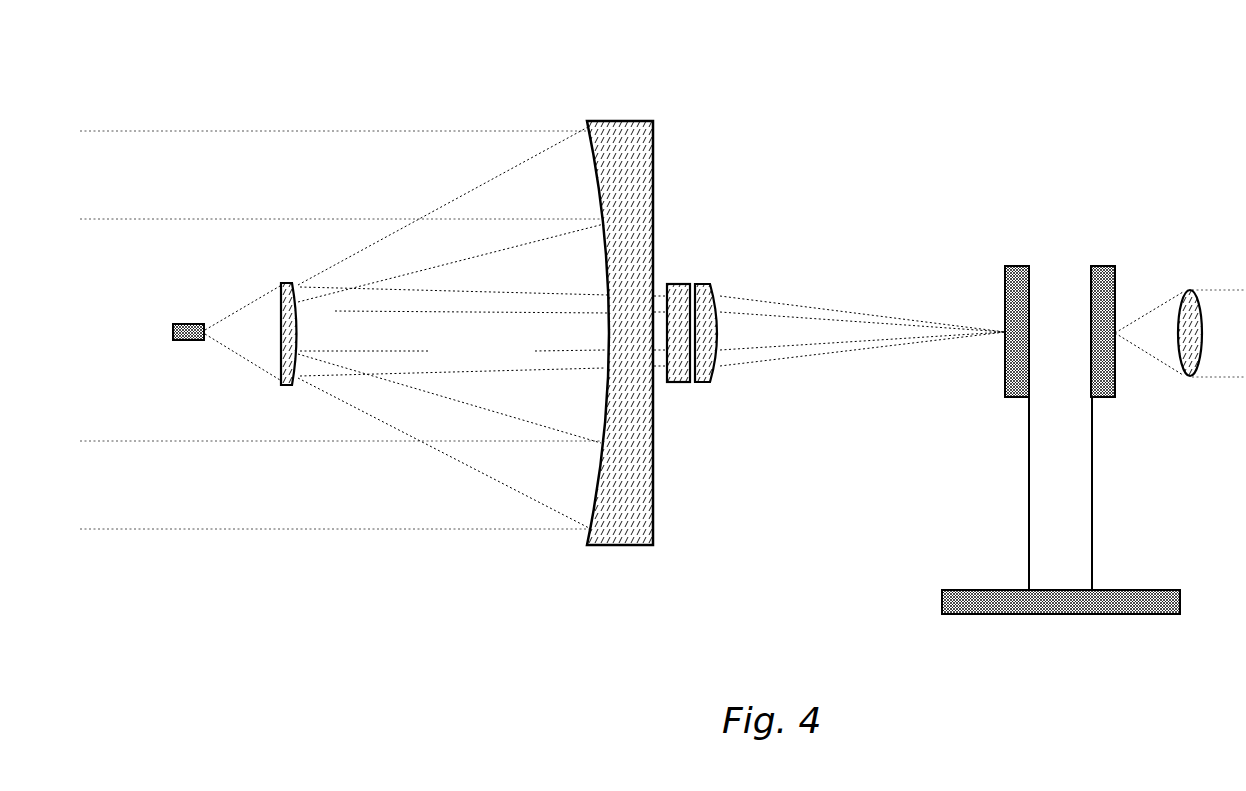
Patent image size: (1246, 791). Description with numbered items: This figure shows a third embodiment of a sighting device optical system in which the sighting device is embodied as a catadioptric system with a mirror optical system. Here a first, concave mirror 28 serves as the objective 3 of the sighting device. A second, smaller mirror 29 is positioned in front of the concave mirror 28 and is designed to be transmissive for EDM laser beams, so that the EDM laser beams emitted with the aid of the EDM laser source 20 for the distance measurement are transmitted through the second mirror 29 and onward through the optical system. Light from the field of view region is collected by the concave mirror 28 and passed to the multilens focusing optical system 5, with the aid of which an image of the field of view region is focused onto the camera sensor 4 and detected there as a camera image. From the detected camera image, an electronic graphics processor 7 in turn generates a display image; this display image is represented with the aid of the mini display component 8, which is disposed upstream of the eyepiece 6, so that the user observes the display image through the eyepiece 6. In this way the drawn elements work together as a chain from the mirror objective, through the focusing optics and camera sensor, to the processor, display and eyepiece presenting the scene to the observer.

The objective 3 is at (603, 52).
The EDM laser source 20 is at (190, 336).
The second mirror 29 is at (290, 285).
The concave mirror 28 is at (625, 124).
The multilens focusing optical system 5 is at (706, 285).
The camera sensor 4 is at (1021, 266).
The mini display component 8 is at (1106, 266).
The eyepiece 6 is at (1189, 300).
The electronic graphics processor 7 is at (1062, 613).